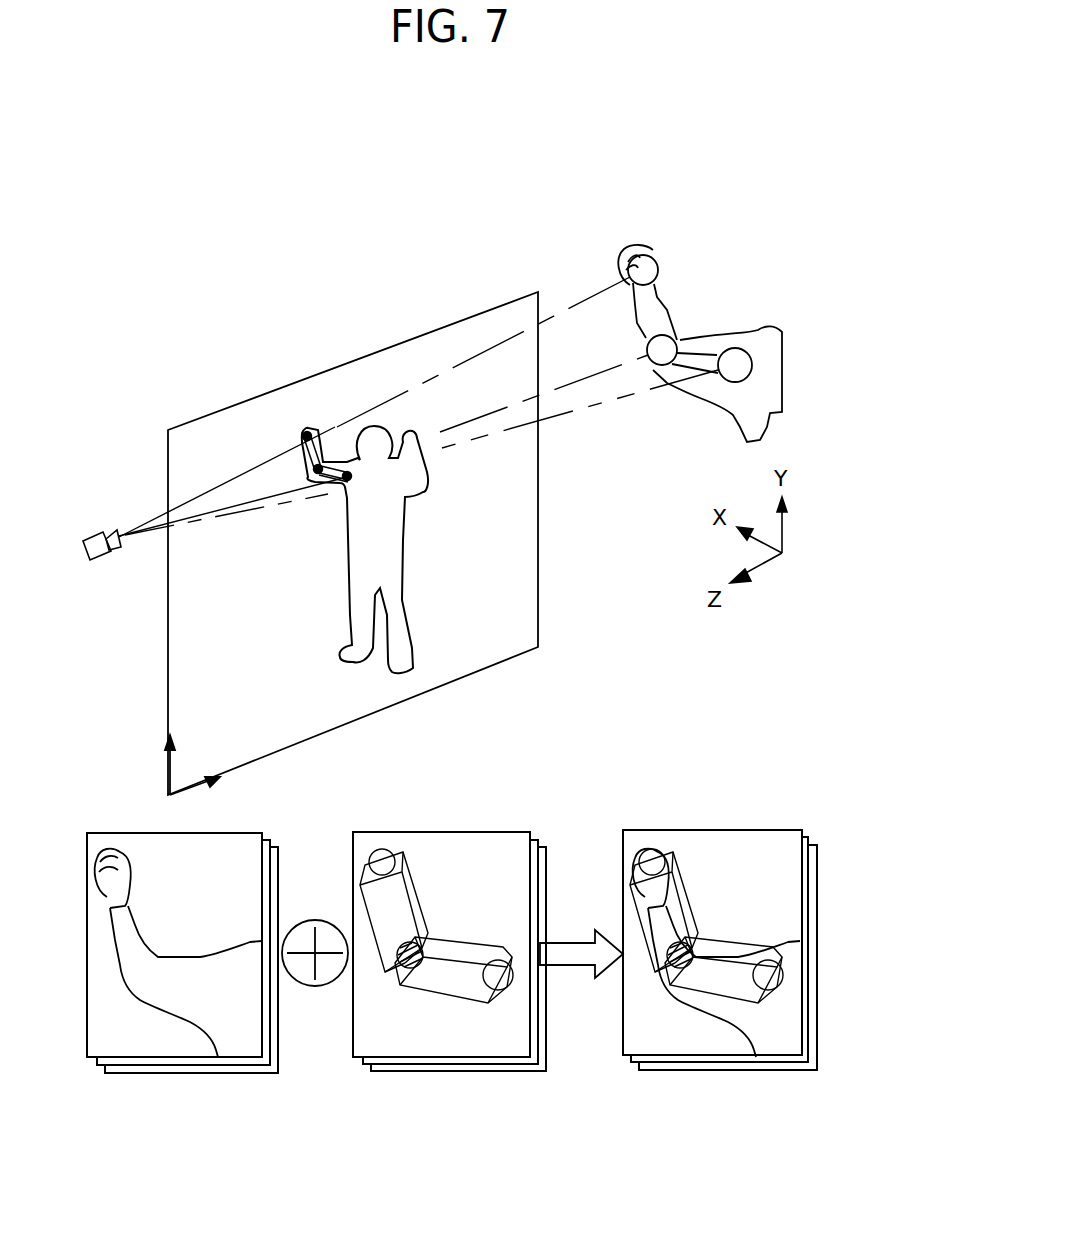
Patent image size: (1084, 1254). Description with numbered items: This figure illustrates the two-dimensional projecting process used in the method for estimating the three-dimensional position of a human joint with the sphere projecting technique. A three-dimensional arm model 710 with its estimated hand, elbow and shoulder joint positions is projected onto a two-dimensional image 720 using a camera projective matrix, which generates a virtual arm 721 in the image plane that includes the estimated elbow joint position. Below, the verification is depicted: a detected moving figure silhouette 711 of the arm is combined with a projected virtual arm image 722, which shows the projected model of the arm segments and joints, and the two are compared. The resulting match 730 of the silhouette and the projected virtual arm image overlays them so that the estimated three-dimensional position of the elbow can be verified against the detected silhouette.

The 3D arm model with joints H, C1, S 710 is at (752, 362).
The 2D image 720 is at (540, 632).
The virtual arm 721 is at (310, 430).
The detected moving figure silhouette 711 is at (230, 832).
The projected virtual arm image 722 is at (498, 830).
The match 730 is at (770, 830).